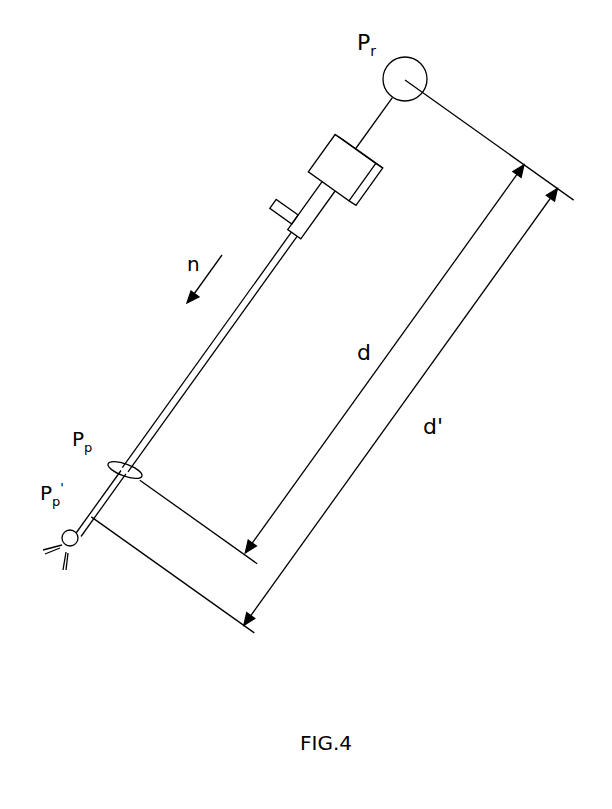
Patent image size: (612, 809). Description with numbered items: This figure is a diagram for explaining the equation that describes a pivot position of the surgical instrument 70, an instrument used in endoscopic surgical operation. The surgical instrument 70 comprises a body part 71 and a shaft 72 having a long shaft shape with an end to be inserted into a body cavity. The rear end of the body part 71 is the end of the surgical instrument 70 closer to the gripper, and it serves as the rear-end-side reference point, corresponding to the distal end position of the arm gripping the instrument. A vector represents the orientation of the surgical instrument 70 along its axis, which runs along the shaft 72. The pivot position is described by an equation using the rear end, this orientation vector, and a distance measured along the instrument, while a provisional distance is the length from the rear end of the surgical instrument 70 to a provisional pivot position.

The surgical instrument 70 is at (157, 133).
The body part 71 is at (316, 160).
The shaft 72 is at (180, 382).